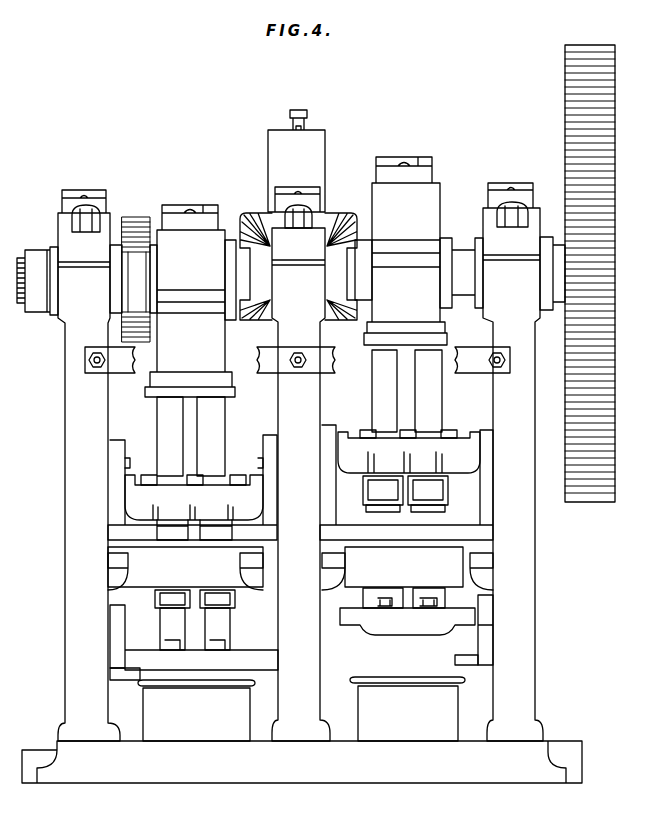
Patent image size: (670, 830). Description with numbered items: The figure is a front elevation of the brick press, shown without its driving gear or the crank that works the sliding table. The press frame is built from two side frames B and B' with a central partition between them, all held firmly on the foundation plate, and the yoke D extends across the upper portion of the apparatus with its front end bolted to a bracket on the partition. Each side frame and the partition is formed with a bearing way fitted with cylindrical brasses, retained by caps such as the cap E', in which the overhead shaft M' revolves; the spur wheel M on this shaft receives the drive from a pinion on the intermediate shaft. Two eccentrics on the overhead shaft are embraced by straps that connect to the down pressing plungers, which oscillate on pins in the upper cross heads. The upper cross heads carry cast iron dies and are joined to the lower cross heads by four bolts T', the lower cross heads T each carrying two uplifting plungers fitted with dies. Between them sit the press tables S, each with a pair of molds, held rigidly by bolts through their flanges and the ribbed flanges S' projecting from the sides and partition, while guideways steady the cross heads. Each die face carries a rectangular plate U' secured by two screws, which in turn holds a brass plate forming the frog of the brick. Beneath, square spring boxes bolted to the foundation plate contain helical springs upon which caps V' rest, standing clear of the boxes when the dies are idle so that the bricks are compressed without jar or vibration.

The side frame of press B is at (77, 465).
The side frame of press B' is at (527, 462).
The yoke D is at (315, 152).
The cap E' is at (40, 269).
The spur wheel M is at (607, 273).
The overhead shaft M' is at (337, 274).
The connecting bolt T' is at (300, 542).
The rectangular plate U' is at (383, 520).
The press table S is at (285, 567).
The ribbed flange S' is at (304, 571).
The lower cross head T is at (301, 634).
The cap V' is at (301, 686).